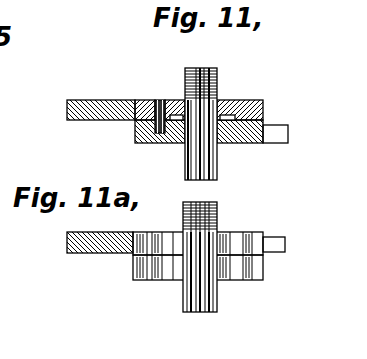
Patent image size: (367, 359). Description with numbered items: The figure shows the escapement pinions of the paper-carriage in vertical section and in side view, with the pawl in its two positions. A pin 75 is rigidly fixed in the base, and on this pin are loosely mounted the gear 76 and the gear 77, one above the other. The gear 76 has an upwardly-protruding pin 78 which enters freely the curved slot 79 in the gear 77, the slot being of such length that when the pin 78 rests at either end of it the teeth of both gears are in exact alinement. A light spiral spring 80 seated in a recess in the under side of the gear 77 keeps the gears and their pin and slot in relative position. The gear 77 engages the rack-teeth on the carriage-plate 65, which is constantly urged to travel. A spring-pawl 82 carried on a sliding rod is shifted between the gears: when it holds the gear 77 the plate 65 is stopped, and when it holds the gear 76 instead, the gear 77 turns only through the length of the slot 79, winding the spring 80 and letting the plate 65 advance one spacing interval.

In FIG. 11, the carriage-plate 65 is at (101, 97).
In FIG. 11A, the carriage-plate 65 is at (100, 229).
In FIG. 11, the pin 75 is at (217, 166).
In FIG. 11A, the pin 75 is at (217, 303).
In FIG. 11, the gear 76 is at (141, 144).
In FIG. 11A, the gear 76 is at (265, 268).
In FIG. 11, the gear 77 is at (265, 103).
In FIG. 11A, the gear 77 is at (229, 240).
In FIG. 11, the pin 78 is at (150, 101).
In FIG. 11, the curved slot 79 is at (161, 100).
In FIG. 11, the spiral spring 80 is at (233, 114).
In FIG. 11, the spring-pawl 82 is at (288, 133).
In FIG. 11A, the spring-pawl 82 is at (280, 235).